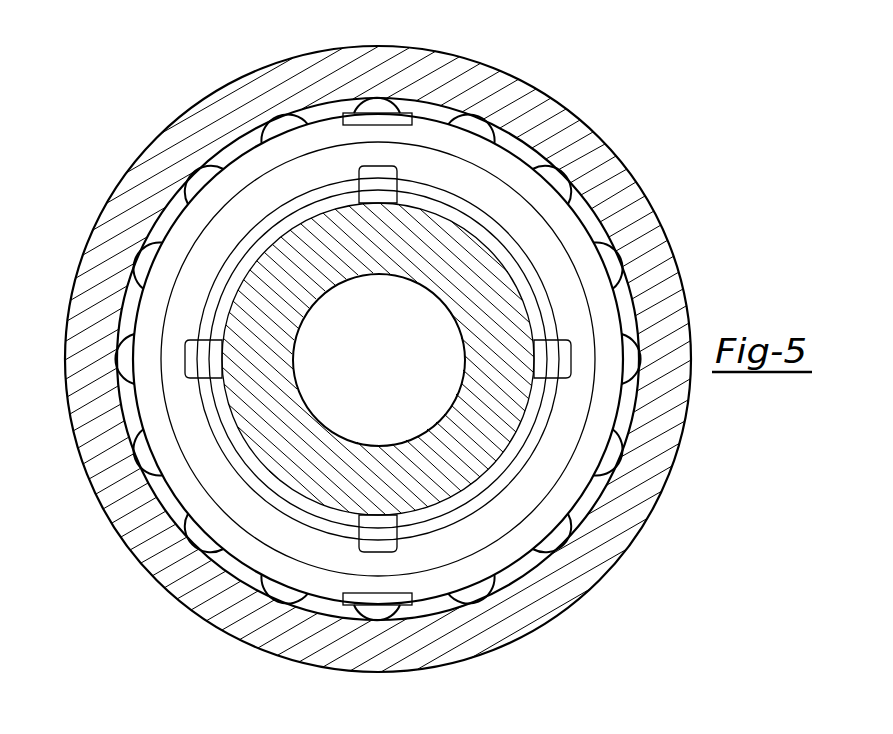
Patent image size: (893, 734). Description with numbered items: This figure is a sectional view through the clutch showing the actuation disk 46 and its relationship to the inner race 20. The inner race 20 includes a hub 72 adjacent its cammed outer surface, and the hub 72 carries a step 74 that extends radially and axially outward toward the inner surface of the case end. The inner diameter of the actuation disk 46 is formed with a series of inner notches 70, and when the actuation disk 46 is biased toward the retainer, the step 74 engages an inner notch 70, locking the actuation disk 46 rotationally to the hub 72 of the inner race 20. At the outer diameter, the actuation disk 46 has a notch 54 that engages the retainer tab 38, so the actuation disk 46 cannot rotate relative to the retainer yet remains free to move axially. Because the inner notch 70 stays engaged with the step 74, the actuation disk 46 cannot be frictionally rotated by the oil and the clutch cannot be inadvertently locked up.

The inner race 20 is at (312, 468).
The retainer tab 38 is at (385, 117).
The actuation disk 46 is at (522, 503).
The notch 54 is at (360, 125).
The inner notch 70 is at (393, 167).
The hub 72 is at (527, 305).
The step 74 is at (373, 178).